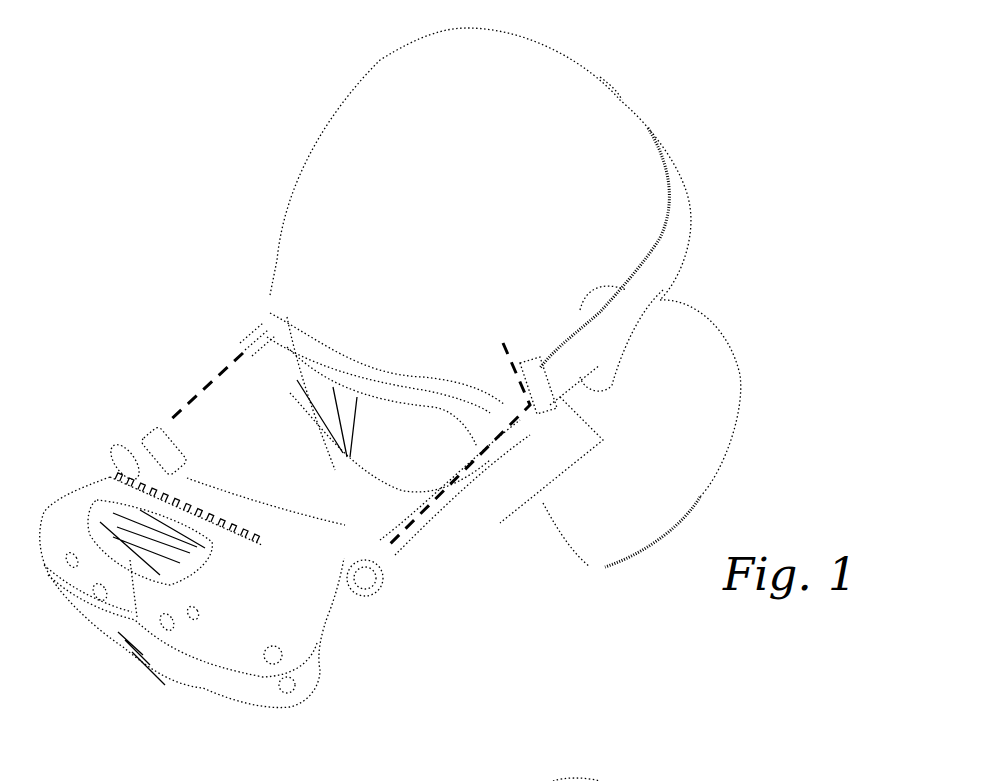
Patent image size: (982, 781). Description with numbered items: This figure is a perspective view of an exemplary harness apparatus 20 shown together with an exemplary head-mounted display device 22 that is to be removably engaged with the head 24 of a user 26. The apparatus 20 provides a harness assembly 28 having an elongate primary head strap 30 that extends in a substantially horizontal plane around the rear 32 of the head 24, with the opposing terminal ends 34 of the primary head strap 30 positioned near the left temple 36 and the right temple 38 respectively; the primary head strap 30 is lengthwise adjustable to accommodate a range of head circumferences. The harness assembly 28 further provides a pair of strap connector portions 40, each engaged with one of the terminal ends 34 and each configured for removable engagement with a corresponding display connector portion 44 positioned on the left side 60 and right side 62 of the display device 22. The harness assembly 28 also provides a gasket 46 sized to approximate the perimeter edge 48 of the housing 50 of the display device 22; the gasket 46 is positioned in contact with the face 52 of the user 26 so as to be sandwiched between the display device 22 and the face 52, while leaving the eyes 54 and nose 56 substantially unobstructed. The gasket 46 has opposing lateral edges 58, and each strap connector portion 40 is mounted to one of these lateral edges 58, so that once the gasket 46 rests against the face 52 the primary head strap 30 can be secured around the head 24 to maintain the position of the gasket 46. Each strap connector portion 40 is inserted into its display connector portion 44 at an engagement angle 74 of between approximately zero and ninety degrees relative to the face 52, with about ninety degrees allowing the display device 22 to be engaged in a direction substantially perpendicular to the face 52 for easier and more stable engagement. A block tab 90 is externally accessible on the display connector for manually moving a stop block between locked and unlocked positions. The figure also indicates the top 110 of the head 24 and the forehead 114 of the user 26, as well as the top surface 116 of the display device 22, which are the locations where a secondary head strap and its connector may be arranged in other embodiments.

The harness apparatus 20 is at (202, 238).
The head-mounted display device 22 is at (170, 705).
The head 24 is at (655, 186).
The user 26 is at (612, 40).
The harness assembly 28 is at (695, 262).
The primary head strap 30 is at (627, 307).
The rear 32 is at (620, 100).
The terminal ends 34 is at (563, 380).
The left temple 36 is at (532, 347).
The right temple 38 is at (287, 293).
The strap connector portions 40 is at (225, 316).
The display connector portions 44 is at (105, 438).
The gasket 46 is at (330, 358).
The perimeter edge 48 is at (180, 453).
The housing 50 is at (333, 643).
The face 52 is at (468, 525).
The eyes 54 is at (425, 410).
The nose 56 is at (367, 465).
The lateral edges 58 is at (270, 303).
The left side 60 is at (393, 557).
The right side 62 is at (110, 480).
The engagement angle 74 is at (523, 396).
The block tab 90 is at (360, 588).
The top 110 is at (450, 173).
The forehead 114 is at (367, 343).
The top surface 116 is at (200, 500).